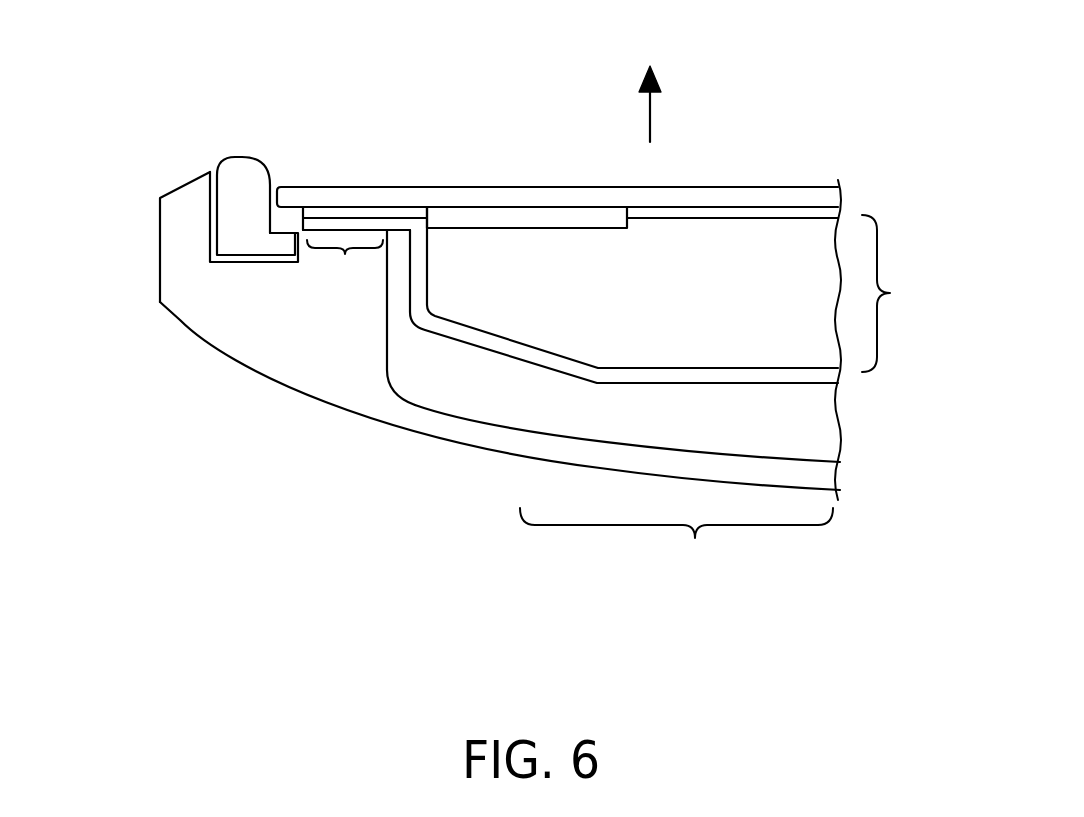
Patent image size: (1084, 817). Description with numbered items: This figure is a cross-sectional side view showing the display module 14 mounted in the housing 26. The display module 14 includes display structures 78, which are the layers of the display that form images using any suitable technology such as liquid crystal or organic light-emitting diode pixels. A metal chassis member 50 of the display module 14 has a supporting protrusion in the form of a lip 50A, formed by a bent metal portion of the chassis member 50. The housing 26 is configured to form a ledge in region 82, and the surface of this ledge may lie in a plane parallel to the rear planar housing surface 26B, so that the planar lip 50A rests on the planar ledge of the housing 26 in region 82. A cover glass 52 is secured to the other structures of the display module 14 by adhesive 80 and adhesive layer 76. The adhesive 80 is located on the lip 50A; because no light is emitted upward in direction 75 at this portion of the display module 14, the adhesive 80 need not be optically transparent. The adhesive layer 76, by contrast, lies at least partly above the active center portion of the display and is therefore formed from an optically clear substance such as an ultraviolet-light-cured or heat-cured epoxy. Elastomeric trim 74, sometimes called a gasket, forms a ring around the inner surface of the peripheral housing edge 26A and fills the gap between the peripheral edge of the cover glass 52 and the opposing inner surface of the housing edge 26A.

The display module 14 is at (703, 87).
The housing 26 is at (813, 483).
The peripheral housing edge 26A is at (173, 228).
The rear planar housing surface 26B is at (676, 542).
The chassis member 50 is at (810, 383).
The lip 50A is at (305, 222).
The cover glass 52 is at (285, 197).
The elastomeric trim 74 is at (240, 167).
The direction 75 is at (647, 110).
The adhesive layer 76 is at (785, 212).
The display structures 78 is at (897, 293).
The adhesive 80 is at (375, 213).
The region 82 is at (347, 252).